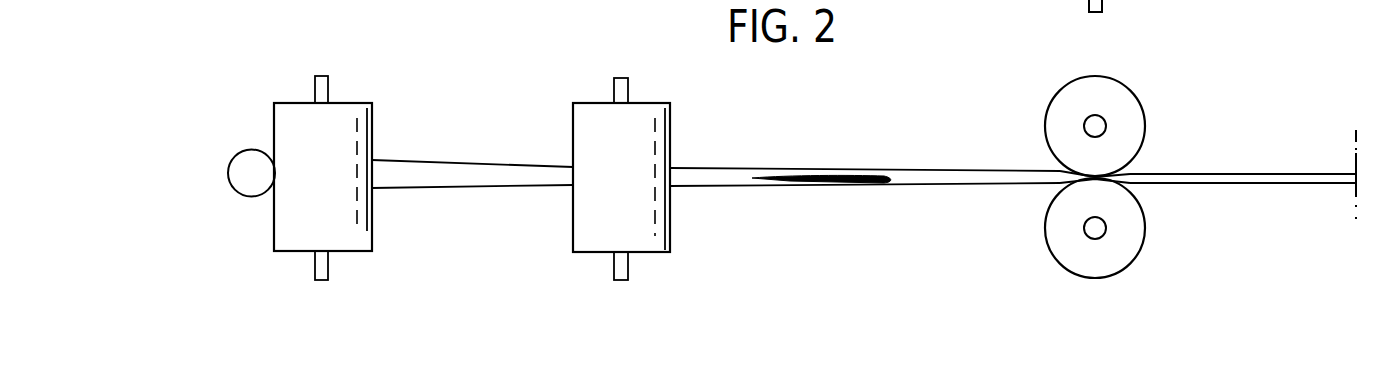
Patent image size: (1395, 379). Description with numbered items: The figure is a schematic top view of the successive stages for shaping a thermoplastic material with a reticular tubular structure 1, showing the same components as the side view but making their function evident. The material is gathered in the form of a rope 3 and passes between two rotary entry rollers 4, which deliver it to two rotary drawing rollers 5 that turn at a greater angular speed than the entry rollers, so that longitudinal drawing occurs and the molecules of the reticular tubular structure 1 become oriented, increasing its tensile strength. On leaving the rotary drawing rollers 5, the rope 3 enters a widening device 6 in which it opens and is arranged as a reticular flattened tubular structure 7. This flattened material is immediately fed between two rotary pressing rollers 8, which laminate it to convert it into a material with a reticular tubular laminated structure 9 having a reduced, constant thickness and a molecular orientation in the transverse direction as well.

The reticular tubular structure 1 is at (220, 173).
The rope 3 is at (470, 177).
The rotary entry rollers 4 is at (299, 223).
The rotary drawing rollers 5 is at (642, 205).
The widening device 6 is at (838, 183).
The reticular flattened tubular structure 7 is at (950, 178).
The rotary pressing rollers 8 is at (1125, 248).
The reticular tubular laminated structure 9 is at (1227, 187).